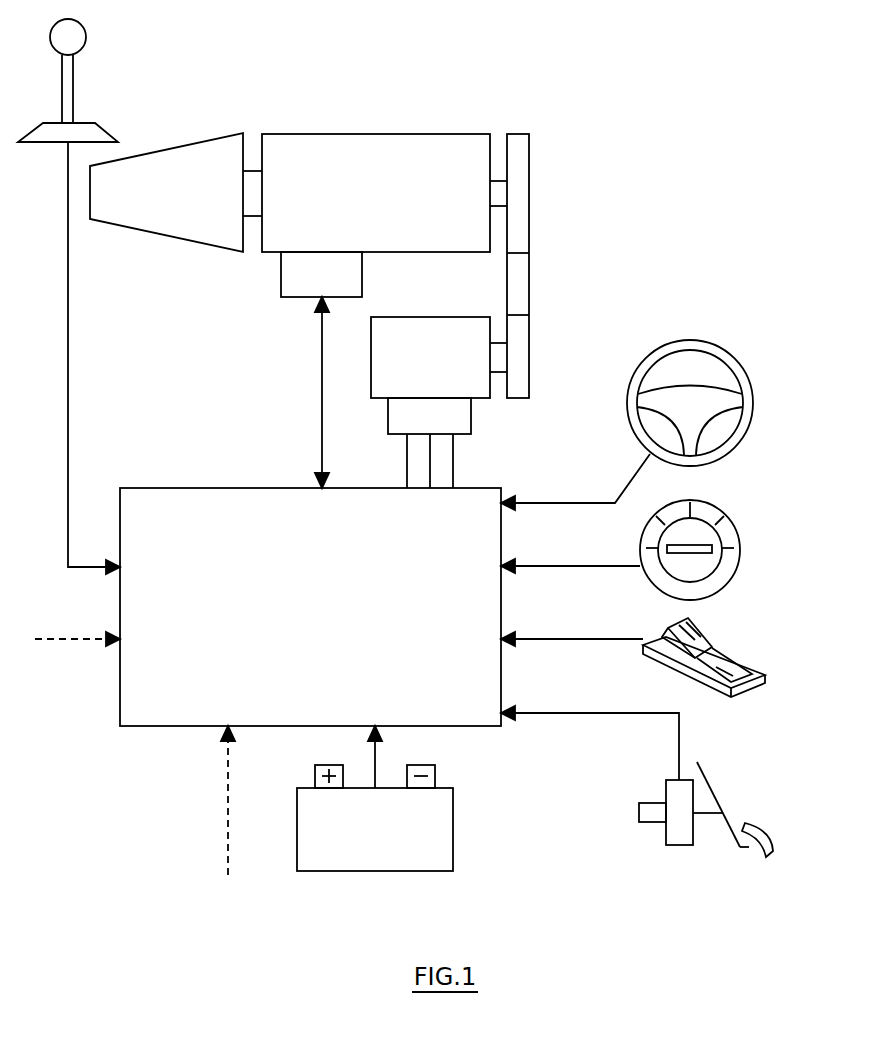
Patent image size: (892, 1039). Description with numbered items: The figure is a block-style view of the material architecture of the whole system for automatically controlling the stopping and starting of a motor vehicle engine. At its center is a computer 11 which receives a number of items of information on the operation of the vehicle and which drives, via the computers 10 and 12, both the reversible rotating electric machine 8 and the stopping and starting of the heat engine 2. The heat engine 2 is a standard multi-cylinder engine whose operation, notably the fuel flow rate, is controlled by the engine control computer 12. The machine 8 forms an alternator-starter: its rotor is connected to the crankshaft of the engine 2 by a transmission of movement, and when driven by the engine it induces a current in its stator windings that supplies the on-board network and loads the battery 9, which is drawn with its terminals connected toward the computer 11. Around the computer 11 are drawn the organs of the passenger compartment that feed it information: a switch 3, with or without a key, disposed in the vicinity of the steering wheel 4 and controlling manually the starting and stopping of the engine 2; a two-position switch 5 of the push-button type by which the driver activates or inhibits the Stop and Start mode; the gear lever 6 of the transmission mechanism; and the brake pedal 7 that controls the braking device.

The heat engine 2 is at (376, 193).
The switch 3 is at (735, 538).
The steering wheel 4 is at (733, 351).
The two-position switch 5 is at (715, 645).
The gear lever 6 is at (82, 42).
The brake pedal 7 is at (764, 826).
The reversible rotating electric machine 8 is at (430, 357).
The battery 9 is at (375, 798).
The computer 10 is at (429, 443).
The computer 11 is at (310, 607).
The engine control computer 12 is at (321, 370).